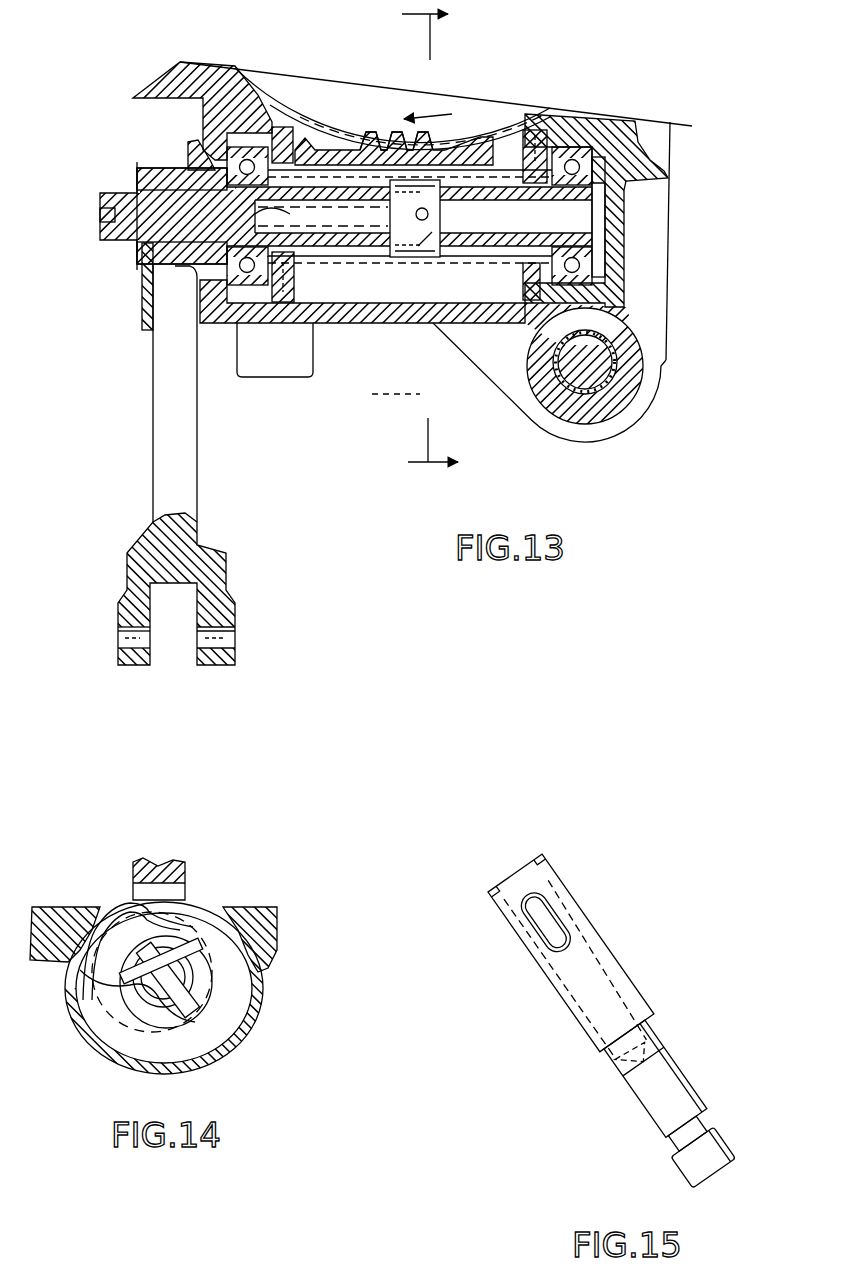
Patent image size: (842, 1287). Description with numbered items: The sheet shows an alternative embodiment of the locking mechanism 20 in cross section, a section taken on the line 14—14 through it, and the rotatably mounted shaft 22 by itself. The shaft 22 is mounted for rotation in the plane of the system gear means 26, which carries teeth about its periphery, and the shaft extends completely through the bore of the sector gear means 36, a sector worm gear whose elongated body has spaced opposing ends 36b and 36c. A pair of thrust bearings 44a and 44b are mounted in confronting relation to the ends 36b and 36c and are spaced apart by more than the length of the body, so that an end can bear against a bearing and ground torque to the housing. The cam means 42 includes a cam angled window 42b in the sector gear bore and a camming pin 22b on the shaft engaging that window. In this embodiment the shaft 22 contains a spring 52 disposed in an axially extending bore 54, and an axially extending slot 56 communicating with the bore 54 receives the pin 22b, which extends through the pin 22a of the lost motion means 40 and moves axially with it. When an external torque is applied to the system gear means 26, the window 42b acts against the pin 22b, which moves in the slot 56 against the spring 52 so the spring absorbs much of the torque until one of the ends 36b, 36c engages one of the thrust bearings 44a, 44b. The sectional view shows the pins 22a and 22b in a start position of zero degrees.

In FIG. 13, the section line 14— 14 is at (415, 236).
In FIG. 13, the locking mechanism 20 is at (374, 388).
In FIG. 13, the rotatably mounted shaft 22 is at (165, 232).
In FIG. 14, the rotatably mounted shaft 22 is at (192, 985).
In FIG. 15, the rotatably mounted shaft 22 is at (567, 1017).
In FIG. 13, the pin of the lost motion means 22a is at (420, 240).
In FIG. 14, the pin of the lost motion means 22a is at (203, 960).
In FIG. 13, the camming member (pin) 22b is at (430, 214).
In FIG. 14, the camming member (pin) 22b is at (170, 1020).
In FIG. 13, the system gear means 26 is at (327, 118).
In FIG. 14, the system gear means 26 is at (188, 862).
In FIG. 13, the sector gear means 36 is at (444, 152).
In FIG. 14, the sector gear means 36 is at (110, 900).
In FIG. 13, the spaced opposing end 36b is at (284, 127).
In FIG. 13, the spaced opposing end 36c is at (500, 155).
In FIG. 13, the lost motion means 40 is at (445, 233).
In FIG. 13, the cam means 42 is at (448, 240).
In FIG. 13, the cam angled window 42b is at (378, 127).
In FIG. 13, the thrust bearing 44a is at (240, 130).
In FIG. 13, the thrust bearing 44b is at (515, 145).
In FIG. 13, the spring 52 is at (337, 245).
In FIG. 13, the axially extending bore 54 is at (195, 268).
In FIG. 15, the axially extending bore 54 is at (630, 985).
In FIG. 13, the axially extending slot 56 is at (372, 262).
In FIG. 15, the axially extending slot 56 is at (547, 927).